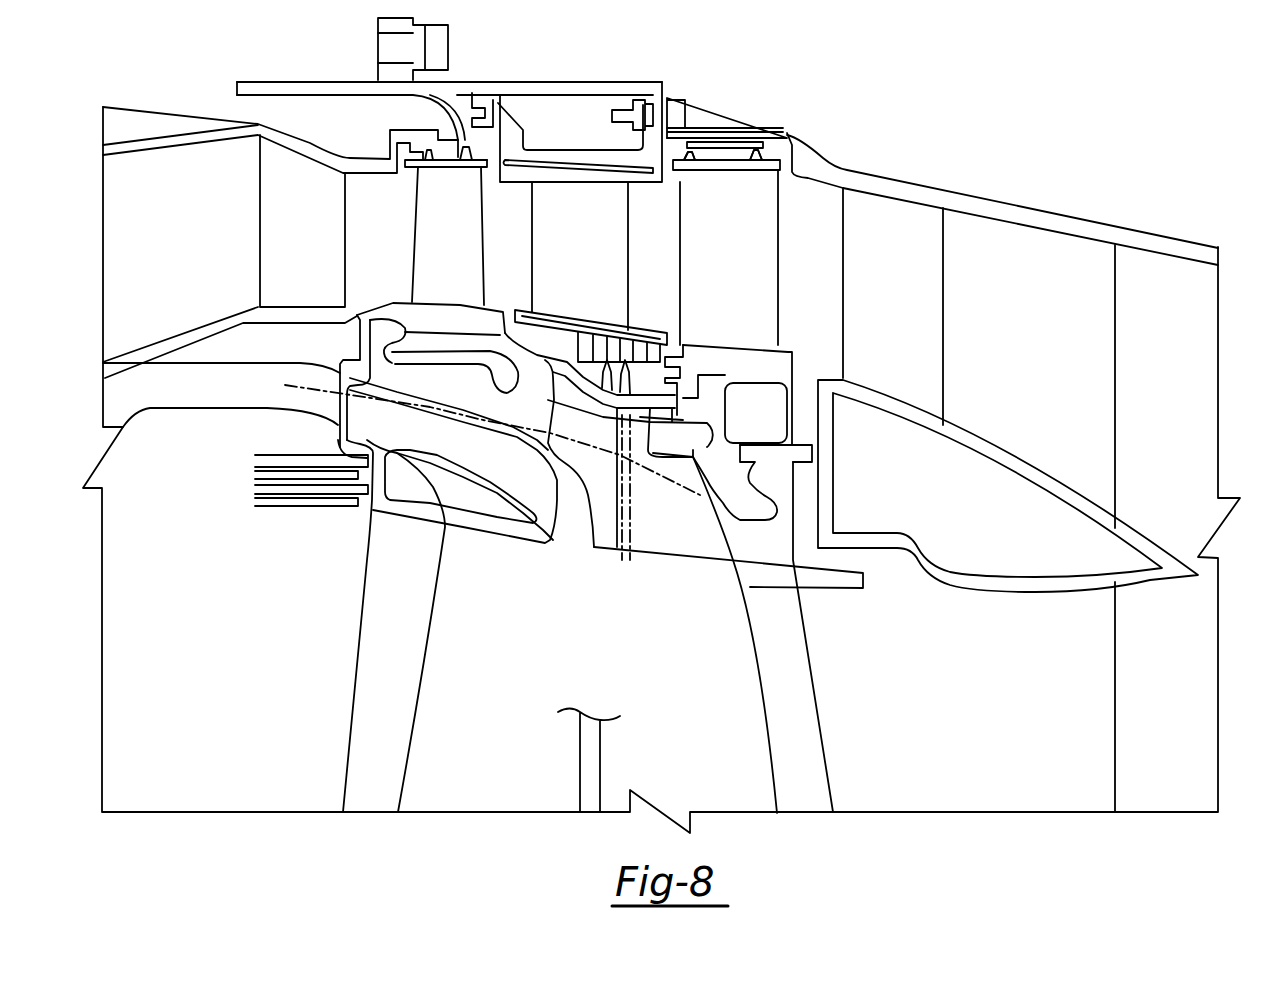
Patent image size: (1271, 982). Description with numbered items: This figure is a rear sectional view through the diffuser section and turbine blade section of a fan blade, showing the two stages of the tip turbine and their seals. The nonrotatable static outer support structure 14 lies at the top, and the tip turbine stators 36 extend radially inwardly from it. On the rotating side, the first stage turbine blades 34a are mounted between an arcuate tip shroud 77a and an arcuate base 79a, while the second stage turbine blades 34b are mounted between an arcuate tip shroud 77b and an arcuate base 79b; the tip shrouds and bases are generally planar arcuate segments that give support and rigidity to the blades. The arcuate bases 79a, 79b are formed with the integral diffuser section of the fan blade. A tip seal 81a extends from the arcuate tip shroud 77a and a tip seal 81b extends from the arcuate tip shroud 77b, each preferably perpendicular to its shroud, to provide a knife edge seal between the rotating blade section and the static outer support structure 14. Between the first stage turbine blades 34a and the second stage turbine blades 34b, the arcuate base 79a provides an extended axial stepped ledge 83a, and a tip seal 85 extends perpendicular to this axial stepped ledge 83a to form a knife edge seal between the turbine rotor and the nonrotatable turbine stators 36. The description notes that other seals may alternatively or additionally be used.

The static outer support structure 14 is at (706, 117).
The tip seal 81a is at (475, 160).
The tip seal 81b is at (780, 152).
The arcuate tip shroud 77a is at (458, 176).
The arcuate tip shroud 77b is at (724, 180).
The first stage turbine blades 34a is at (464, 262).
The tip turbine stators 36 is at (598, 242).
The second stage turbine blades 34b is at (752, 309).
The tip seal 85 is at (626, 372).
The arcuate base 79a is at (375, 355).
The axial stepped ledge 83a is at (675, 402).
The arcuate base 79b is at (787, 433).